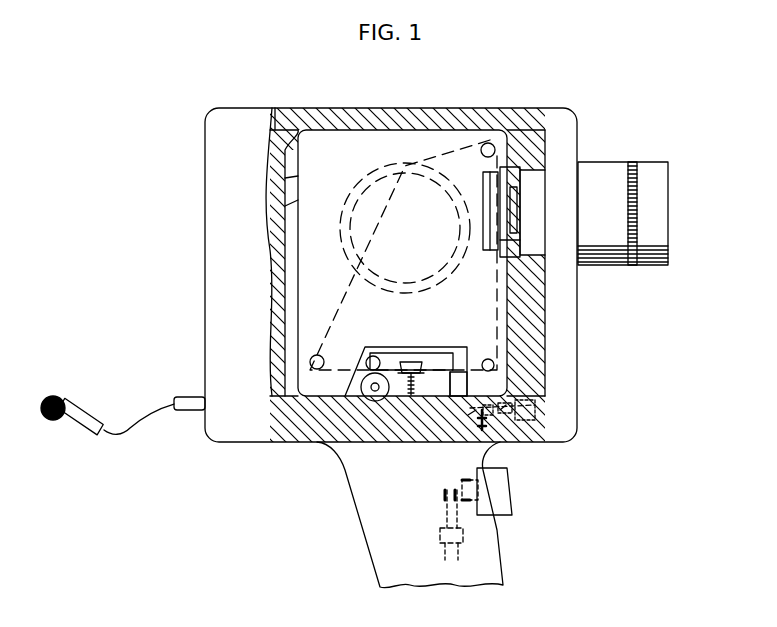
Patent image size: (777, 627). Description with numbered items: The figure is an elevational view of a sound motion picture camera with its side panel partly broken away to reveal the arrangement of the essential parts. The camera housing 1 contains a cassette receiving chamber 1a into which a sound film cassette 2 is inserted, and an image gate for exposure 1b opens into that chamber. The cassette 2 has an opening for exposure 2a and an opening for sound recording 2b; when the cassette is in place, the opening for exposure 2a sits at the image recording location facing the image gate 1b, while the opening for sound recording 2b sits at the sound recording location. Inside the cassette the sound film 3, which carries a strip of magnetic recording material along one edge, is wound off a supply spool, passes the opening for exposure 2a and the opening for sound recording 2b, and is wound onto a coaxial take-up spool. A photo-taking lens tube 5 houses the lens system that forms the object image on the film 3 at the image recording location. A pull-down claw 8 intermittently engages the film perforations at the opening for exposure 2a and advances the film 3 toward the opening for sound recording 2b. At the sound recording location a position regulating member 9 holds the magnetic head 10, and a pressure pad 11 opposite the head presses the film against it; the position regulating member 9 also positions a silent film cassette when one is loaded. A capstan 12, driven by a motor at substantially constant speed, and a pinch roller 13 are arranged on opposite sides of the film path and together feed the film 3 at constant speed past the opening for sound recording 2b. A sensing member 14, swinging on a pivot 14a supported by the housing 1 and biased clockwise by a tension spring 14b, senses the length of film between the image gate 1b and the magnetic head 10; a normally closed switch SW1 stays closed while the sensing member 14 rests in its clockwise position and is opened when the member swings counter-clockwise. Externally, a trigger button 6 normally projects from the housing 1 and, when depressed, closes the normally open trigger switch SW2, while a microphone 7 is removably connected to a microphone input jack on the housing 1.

The housing 1 is at (240, 146).
The cassette receiving chamber 1a is at (288, 107).
The image gate for exposure 1b is at (548, 198).
The sound film cassette 2 is at (335, 167).
The opening for exposure 2a is at (486, 185).
The opening for sound recording 2b is at (456, 353).
The sound film 3 is at (518, 246).
The photo-taking lens tube 5 is at (618, 166).
The trigger button 6 is at (504, 490).
The microphone 7 is at (93, 416).
The pull-down claw 8 is at (517, 224).
The position regulating member 9 is at (416, 363).
The magnetic head 10 is at (405, 370).
The pressure pad 11 is at (440, 352).
The capstan 12 is at (370, 360).
The pinch roller 13 is at (372, 401).
The sensing member 14 is at (464, 376).
The pivot 14a is at (474, 416).
The tension spring 14b is at (506, 438).
The normally closed switch SW1 is at (535, 406).
The trigger switch SW2 is at (465, 537).